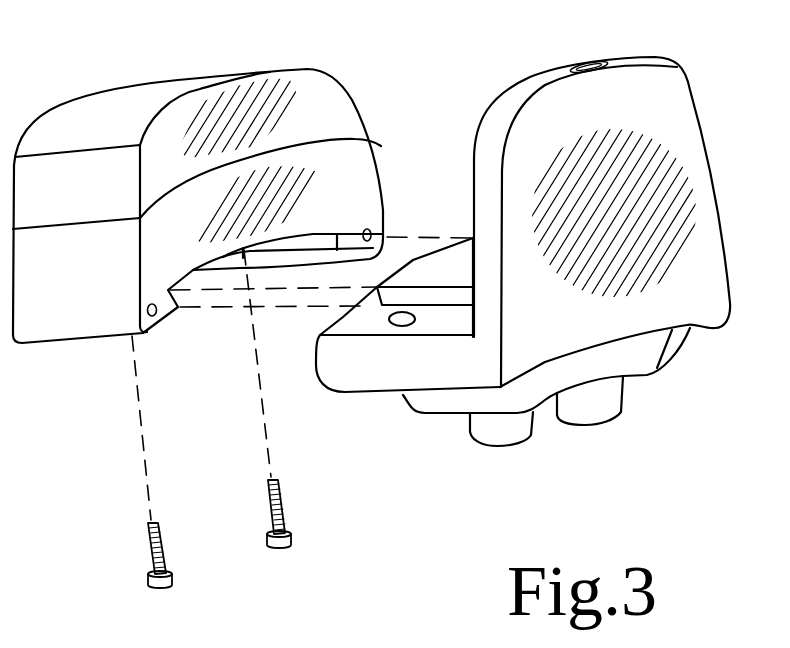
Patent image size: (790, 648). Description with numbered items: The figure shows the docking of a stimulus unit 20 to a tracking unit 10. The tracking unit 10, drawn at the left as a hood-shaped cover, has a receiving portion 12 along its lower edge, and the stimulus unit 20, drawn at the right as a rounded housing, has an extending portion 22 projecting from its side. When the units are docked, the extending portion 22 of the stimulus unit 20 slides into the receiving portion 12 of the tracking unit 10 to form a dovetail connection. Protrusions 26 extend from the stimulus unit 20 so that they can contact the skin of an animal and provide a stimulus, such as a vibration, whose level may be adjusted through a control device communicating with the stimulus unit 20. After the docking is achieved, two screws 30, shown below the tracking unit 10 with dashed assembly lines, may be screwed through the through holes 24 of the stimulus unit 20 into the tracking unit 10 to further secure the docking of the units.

The tracking unit 10 is at (226, 77).
The receiving portion 12 is at (303, 243).
The stimulus unit 20 is at (677, 90).
The extending portion 22 is at (413, 258).
The through holes 24 is at (400, 325).
The protrusions 26 is at (502, 447).
The screws 30 is at (148, 578).